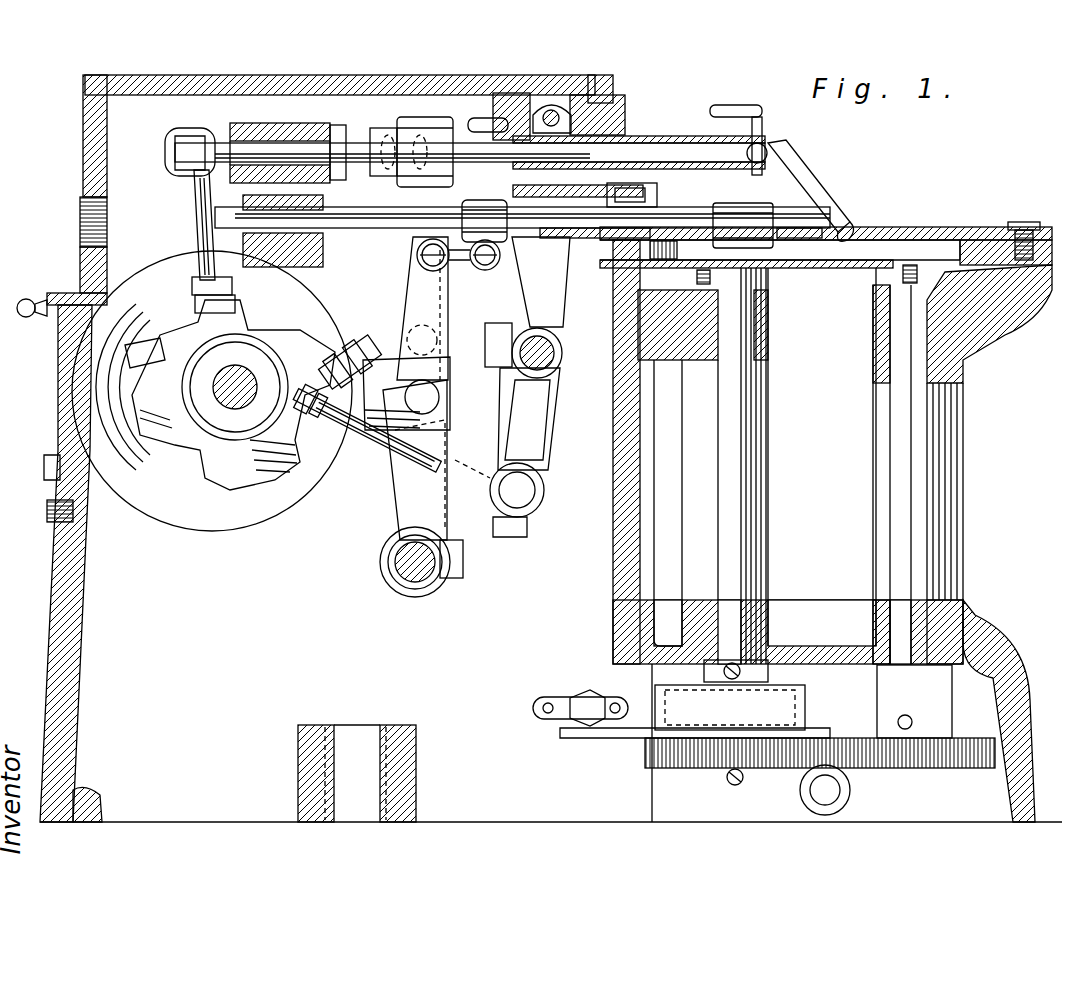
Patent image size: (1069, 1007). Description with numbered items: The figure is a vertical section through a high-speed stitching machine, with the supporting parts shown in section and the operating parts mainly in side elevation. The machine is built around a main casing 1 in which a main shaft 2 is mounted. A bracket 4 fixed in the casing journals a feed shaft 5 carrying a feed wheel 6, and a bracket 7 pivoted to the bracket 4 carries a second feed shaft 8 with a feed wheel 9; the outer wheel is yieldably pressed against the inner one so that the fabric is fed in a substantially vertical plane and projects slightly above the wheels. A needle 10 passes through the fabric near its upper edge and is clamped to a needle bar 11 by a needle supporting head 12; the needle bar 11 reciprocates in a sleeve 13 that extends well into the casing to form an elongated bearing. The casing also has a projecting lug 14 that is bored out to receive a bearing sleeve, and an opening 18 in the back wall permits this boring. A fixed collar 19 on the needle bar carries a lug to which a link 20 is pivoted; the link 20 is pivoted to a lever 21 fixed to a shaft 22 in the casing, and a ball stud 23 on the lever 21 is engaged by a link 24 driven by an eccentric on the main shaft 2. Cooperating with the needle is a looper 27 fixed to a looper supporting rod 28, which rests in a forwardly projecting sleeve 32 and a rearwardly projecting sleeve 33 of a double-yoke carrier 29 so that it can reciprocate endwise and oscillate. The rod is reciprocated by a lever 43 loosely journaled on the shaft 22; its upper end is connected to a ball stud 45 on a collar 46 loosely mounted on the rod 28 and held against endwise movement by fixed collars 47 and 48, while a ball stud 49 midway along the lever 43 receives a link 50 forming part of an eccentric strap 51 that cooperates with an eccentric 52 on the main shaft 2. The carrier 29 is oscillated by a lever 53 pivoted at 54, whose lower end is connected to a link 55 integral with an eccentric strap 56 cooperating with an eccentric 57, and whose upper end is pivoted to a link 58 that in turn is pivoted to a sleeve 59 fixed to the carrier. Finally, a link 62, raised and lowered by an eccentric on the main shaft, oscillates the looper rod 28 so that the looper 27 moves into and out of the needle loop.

The main casing 1 is at (77, 583).
The main shaft 2 is at (213, 397).
The bracket 4 is at (760, 573).
The feed shaft 5 is at (740, 335).
The feed wheel 6 is at (776, 268).
The bracket 7 is at (947, 517).
The feed shaft 8 is at (895, 360).
The feed wheel 9 is at (930, 252).
The needle 10 is at (850, 228).
The needle bar 11 is at (692, 216).
The needle supporting head 12 is at (738, 232).
The sleeve 13 is at (565, 282).
The projecting lug 14 is at (323, 267).
The opening 18 is at (97, 232).
The fixed collar 19 is at (487, 270).
The link 20 is at (445, 272).
The lever 21 is at (427, 280).
The shaft 22 is at (413, 568).
The ball stud 23 is at (390, 437).
The link 24 is at (348, 440).
The looper 27 is at (800, 170).
The looper supporting rod 28 is at (662, 153).
The carrier 29 is at (340, 126).
The sleeve 32 is at (627, 140).
The sleeve 33 is at (240, 124).
The lever 43 is at (410, 244).
The ball stud 45 is at (405, 128).
The collar 46 is at (415, 140).
The fixed collar 47 is at (262, 127).
The fixed collar 48 is at (478, 118).
The ball stud 49 is at (440, 372).
The link 50 is at (338, 345).
The eccentric strap 51 is at (255, 432).
The eccentric 52 is at (272, 362).
The lever 53 is at (548, 408).
The pivot 54 is at (560, 350).
The link 55 is at (488, 482).
The eccentric strap 56 is at (140, 388).
The eccentric 57 is at (145, 344).
The link 58 is at (560, 238).
The sleeve 59 is at (657, 198).
The link 62 is at (200, 230).